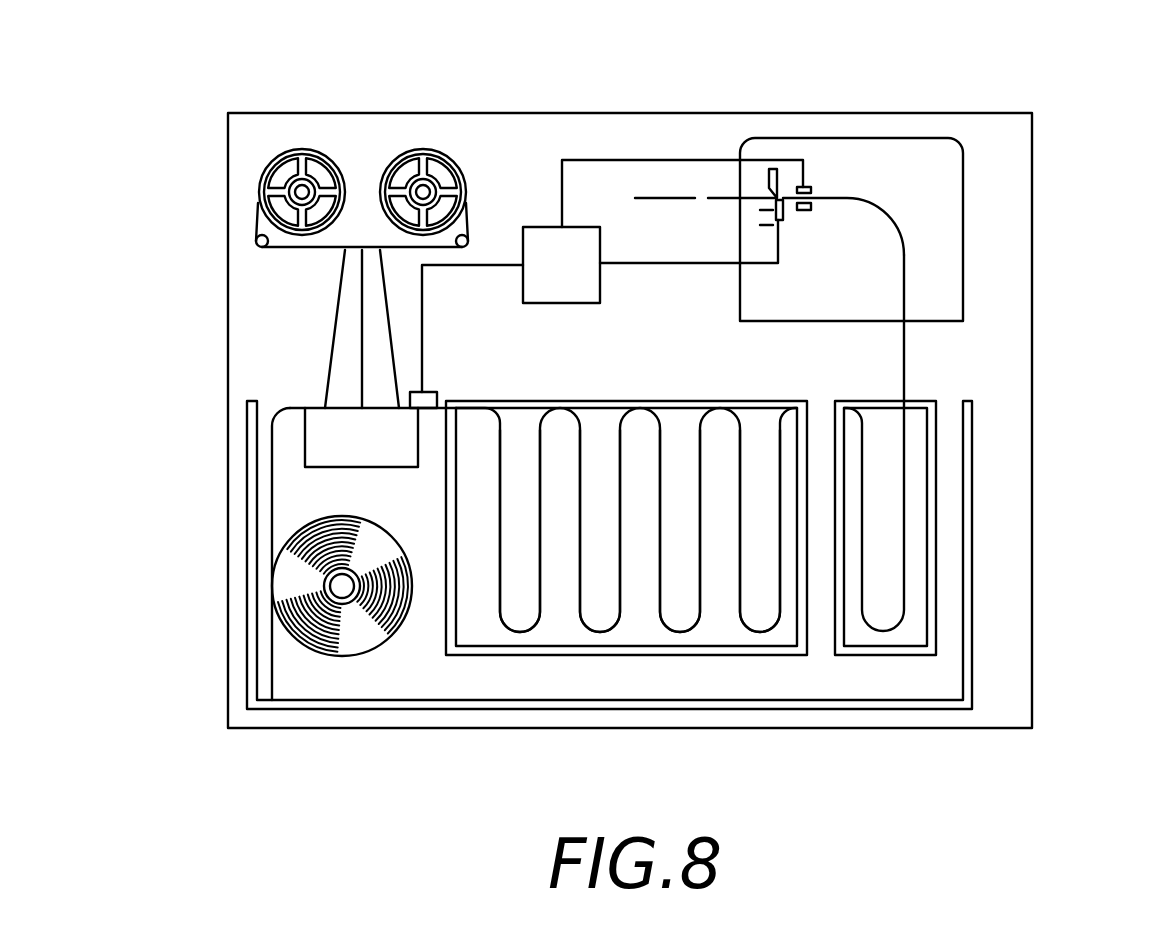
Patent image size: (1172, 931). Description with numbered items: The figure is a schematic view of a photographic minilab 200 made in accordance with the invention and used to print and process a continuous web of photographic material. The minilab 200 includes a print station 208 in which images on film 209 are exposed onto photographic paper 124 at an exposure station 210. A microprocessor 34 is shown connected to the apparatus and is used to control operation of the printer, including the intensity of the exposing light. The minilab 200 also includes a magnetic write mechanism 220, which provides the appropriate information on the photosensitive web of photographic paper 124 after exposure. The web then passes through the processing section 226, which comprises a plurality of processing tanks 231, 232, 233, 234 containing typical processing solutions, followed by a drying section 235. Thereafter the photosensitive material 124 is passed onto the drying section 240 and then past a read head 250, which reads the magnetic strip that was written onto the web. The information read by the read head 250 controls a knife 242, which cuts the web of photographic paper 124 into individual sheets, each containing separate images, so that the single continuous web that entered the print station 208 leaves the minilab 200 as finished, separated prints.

The photographic minilab 200 is at (627, 94).
The magnetic write mechanism 220 is at (413, 113).
The film 209 is at (257, 232).
The print station 208 is at (254, 279).
The exposure station 210 is at (312, 402).
The photographic paper 124 is at (290, 409).
The microprocessor 34 is at (550, 227).
The processing section 226 is at (898, 352).
The processing tank 231 is at (520, 425).
The processing tank 232 is at (600, 425).
The processing tank 233 is at (688, 425).
The processing tank 234 is at (775, 425).
The drying section 235 is at (915, 420).
The drying section 240 is at (948, 208).
The knife 242 is at (777, 170).
The read head 250 is at (807, 186).